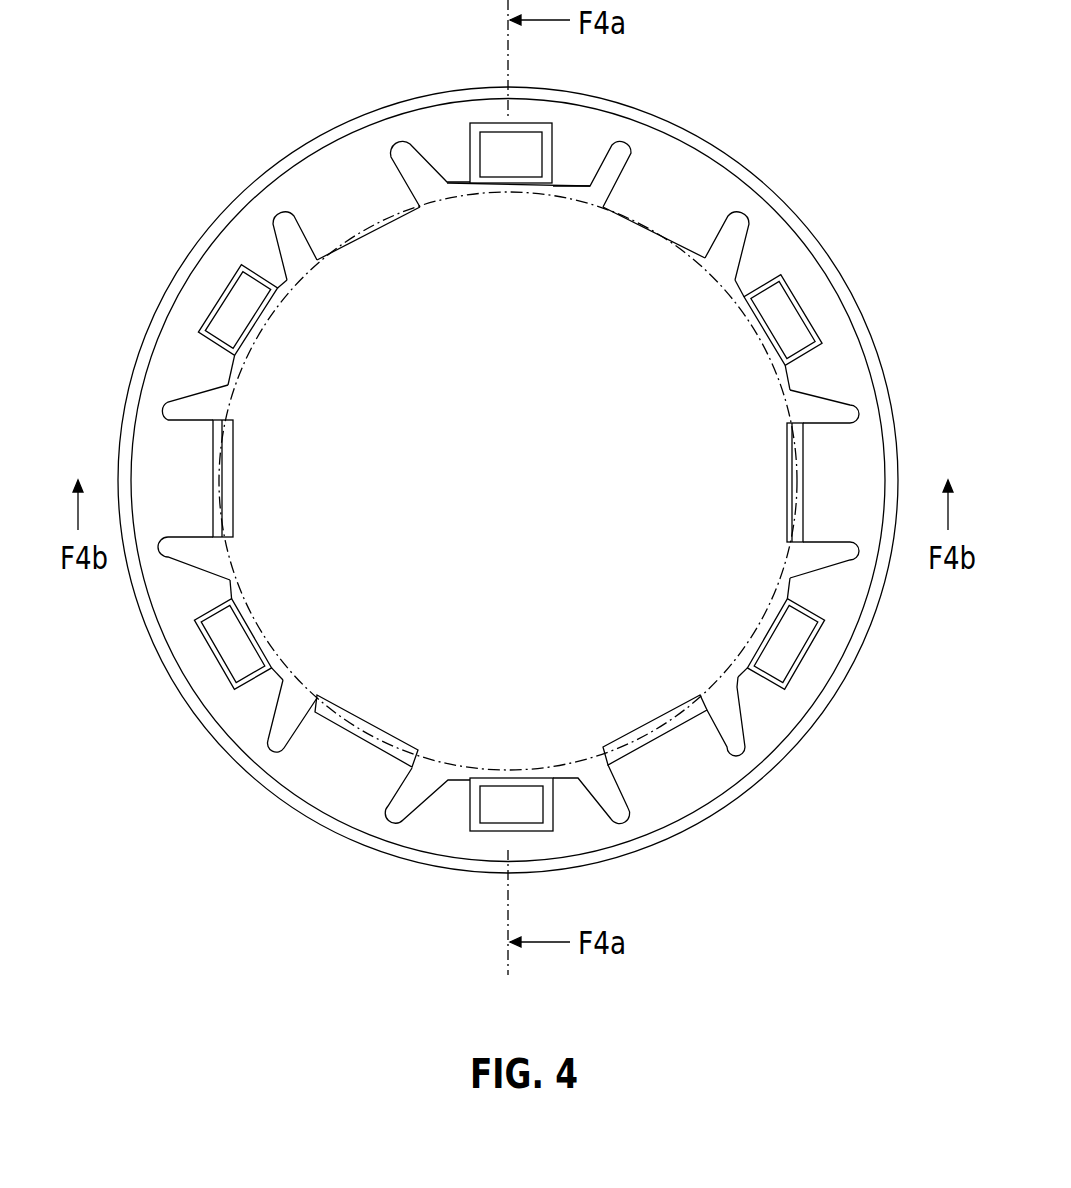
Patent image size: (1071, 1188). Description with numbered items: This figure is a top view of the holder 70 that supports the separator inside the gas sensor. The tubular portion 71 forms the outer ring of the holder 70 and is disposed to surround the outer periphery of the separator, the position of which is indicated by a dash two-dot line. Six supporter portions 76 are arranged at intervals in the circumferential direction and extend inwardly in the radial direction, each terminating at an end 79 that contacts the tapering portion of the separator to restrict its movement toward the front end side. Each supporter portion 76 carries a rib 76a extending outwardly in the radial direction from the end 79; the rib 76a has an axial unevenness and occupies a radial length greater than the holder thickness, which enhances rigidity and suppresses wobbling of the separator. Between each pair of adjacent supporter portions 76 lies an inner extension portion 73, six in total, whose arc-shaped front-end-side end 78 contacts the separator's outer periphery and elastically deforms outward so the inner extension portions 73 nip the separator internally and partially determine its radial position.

The holder 70 is at (850, 151).
The tubular portion 71 is at (857, 323).
The inner extension portion 73 is at (340, 190).
The supporter portion 76 is at (447, 130).
The rib 76a is at (515, 150).
The front-end-side end 78 is at (654, 722).
The end 79 is at (545, 190).